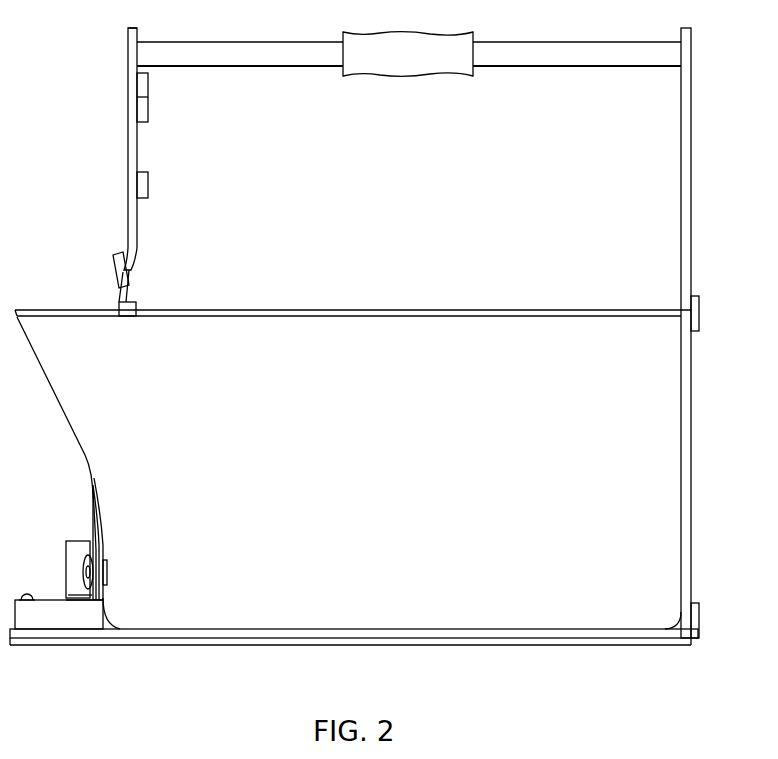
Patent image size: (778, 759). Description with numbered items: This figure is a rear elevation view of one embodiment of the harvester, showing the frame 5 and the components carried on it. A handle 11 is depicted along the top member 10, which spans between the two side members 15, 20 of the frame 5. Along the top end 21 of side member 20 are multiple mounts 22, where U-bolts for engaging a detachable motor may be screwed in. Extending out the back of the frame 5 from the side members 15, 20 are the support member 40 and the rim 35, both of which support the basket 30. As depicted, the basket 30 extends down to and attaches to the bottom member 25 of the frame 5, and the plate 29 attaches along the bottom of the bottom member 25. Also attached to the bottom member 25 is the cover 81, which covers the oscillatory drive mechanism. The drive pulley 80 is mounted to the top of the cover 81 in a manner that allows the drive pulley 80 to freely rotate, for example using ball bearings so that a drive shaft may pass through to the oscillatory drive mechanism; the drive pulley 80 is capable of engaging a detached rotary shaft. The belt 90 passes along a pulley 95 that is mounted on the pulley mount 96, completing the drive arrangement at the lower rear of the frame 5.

The frame 5 is at (68, 50).
The top member 10 is at (267, 46).
The handle 11 is at (417, 46).
The side member 15 is at (686, 158).
The side member 20 is at (130, 146).
The top end 21 is at (131, 50).
The mounts 22 is at (144, 85).
The bottom member 25 is at (112, 631).
The plate 29 is at (195, 646).
The basket 30 is at (382, 468).
The rim 35 is at (300, 312).
The support member 40 is at (127, 290).
The drive pulley 80 is at (77, 565).
The cover 81 is at (33, 612).
The belt 90 is at (75, 600).
The pulley 95 is at (86, 558).
The pulley mount 96 is at (102, 540).